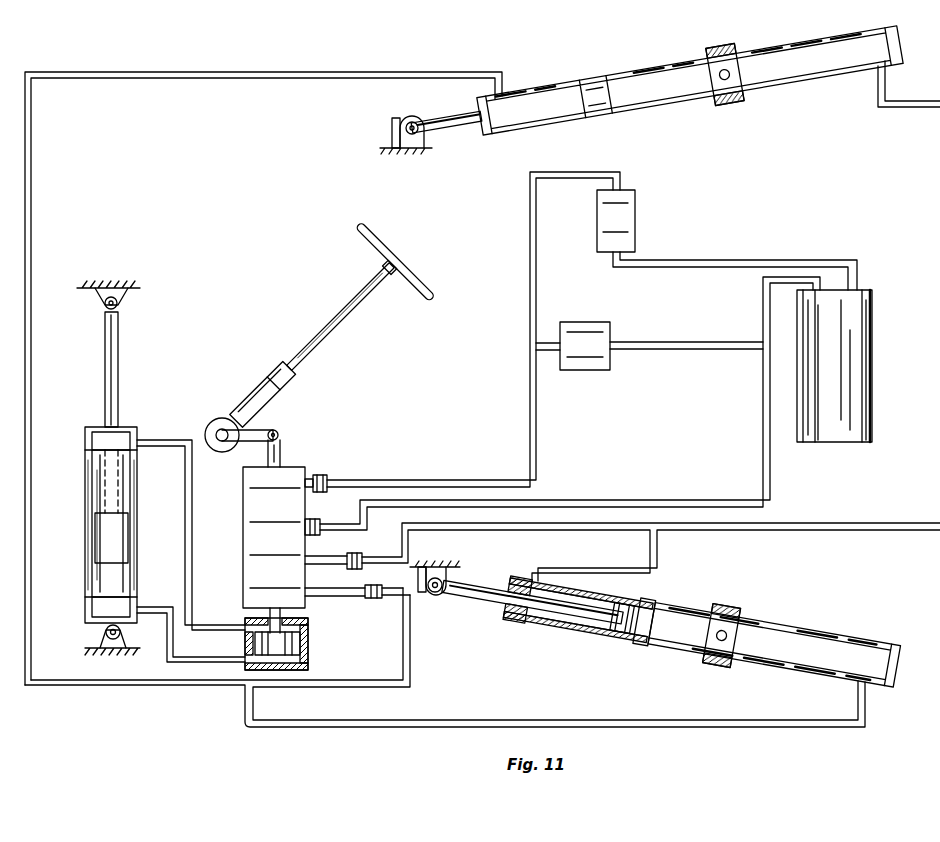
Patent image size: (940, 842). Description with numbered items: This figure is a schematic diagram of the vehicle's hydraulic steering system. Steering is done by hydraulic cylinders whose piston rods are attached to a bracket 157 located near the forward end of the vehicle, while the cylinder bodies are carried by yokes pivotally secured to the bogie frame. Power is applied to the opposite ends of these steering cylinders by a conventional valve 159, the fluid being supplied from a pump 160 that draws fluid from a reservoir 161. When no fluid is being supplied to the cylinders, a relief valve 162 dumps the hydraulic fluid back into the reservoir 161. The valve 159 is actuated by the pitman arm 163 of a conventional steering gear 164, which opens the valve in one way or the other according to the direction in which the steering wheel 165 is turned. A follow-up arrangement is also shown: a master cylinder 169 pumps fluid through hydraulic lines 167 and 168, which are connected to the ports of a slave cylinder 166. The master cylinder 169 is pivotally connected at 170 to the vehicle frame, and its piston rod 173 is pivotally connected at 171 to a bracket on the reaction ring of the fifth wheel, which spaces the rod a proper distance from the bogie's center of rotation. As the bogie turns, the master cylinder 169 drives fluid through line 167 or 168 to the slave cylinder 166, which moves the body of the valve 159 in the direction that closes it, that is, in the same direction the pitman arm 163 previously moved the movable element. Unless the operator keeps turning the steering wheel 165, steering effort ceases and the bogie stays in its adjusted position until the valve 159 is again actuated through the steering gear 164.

The bracket 157 is at (408, 118).
The valve 159 is at (253, 562).
The pump 160 is at (633, 208).
The reservoir 161 is at (863, 362).
The relief valve 162 is at (605, 336).
The pitman arm 163 is at (265, 430).
The steering gear 164 is at (257, 385).
The steering wheel 165 is at (436, 298).
The slave cylinder 166 is at (310, 627).
The hydraulic line 167 is at (175, 659).
The hydraulic line 168 is at (192, 518).
The master cylinder 169 is at (94, 528).
The pivotal connection 170 is at (105, 634).
The pivotal connection 171 is at (118, 303).
The piston rod 173 is at (118, 376).